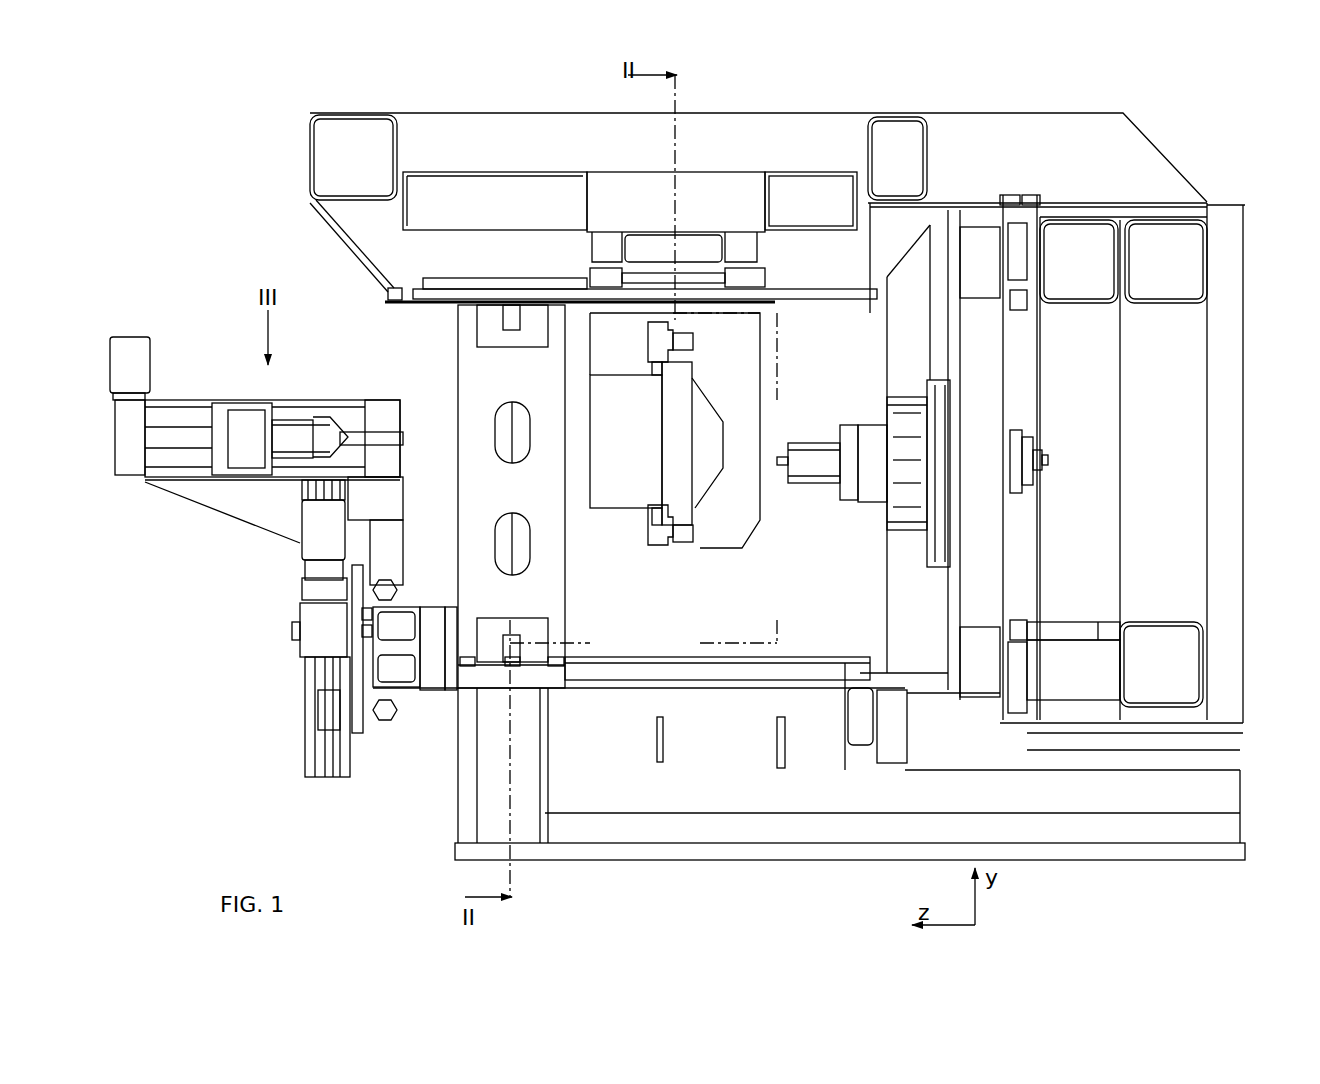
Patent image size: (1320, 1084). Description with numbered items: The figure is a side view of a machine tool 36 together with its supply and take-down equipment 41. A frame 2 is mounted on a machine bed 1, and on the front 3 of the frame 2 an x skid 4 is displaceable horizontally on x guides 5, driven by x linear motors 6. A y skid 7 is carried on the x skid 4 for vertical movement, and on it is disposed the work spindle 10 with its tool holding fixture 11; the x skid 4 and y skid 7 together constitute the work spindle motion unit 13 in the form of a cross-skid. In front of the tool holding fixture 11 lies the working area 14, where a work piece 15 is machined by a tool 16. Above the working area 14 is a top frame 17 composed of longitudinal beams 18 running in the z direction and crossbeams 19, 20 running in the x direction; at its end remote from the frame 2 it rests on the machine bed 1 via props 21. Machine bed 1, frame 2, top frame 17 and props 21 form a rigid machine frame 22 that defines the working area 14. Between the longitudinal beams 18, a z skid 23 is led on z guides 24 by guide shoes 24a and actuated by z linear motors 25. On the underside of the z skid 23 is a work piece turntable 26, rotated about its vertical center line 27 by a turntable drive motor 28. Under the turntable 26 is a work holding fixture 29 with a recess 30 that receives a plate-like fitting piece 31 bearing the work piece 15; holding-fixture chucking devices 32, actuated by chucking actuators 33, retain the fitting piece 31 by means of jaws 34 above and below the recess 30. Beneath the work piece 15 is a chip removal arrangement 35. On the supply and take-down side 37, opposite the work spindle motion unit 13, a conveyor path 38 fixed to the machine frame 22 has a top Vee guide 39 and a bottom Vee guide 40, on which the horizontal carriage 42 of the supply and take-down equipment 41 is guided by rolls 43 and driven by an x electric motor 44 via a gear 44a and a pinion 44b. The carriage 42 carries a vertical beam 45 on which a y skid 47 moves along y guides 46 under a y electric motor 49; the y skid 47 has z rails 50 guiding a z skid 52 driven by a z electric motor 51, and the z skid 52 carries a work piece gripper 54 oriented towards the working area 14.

The machine bed 1 is at (735, 780).
The frame 2 is at (1187, 260).
The front 3 is at (1042, 210).
The x skid 4 is at (985, 475).
The x guides 5 is at (1020, 312).
The x linear motors 6 is at (1020, 256).
The y skid 7 is at (903, 492).
The work spindle 10 is at (840, 502).
The tool holding fixture 11 is at (810, 470).
The work spindle motion unit 13 is at (1050, 480).
The working area 14 is at (836, 608).
The work piece 15 is at (640, 450).
The tool 16 is at (782, 467).
The top frame 17 is at (308, 148).
The longitudinal beams 18 is at (493, 140).
The crossbeam 19 is at (357, 152).
The crossbeam 20 is at (895, 150).
The props 21 is at (528, 503).
The machine frame 22 is at (340, 240).
The z skid 23 is at (739, 219).
The z guides 24 is at (455, 284).
The guide shoes 24a is at (605, 278).
The z linear motors 25 is at (512, 219).
The work piece turntable 26 is at (733, 312).
The center line 27 is at (678, 148).
The turntable drive motor 28 is at (650, 250).
The work holding fixture 29 is at (752, 420).
The recess 30 is at (695, 518).
The fitting piece 31 is at (692, 450).
The holding-fixture chucking devices 32 is at (646, 340).
The chucking actuators 33 is at (680, 341).
The jaws 34 is at (654, 366).
The chip removal arrangement 35 is at (641, 657).
The machine tool 36 is at (685, 772).
The supply and take-down side 37 is at (447, 378).
The conveyor path 38 is at (410, 657).
The top Vee guide 39 is at (396, 607).
The bottom Vee guide 40 is at (400, 690).
The supply and take-down equipment 41 is at (200, 362).
The horizontal carriage 42 is at (364, 722).
The rolls 43 is at (396, 585).
The x electric motor 44 is at (320, 532).
The gear 44a is at (360, 631).
The pinion 44b is at (360, 614).
The vertical beam 45 is at (312, 728).
The y guides 46 is at (322, 768).
The y skid 47 is at (298, 592).
The y electric motor 49 is at (385, 490).
The z rails 50 is at (172, 435).
The z electric motor 51 is at (130, 360).
The z skid 52 is at (240, 430).
The work piece gripper 54 is at (395, 440).